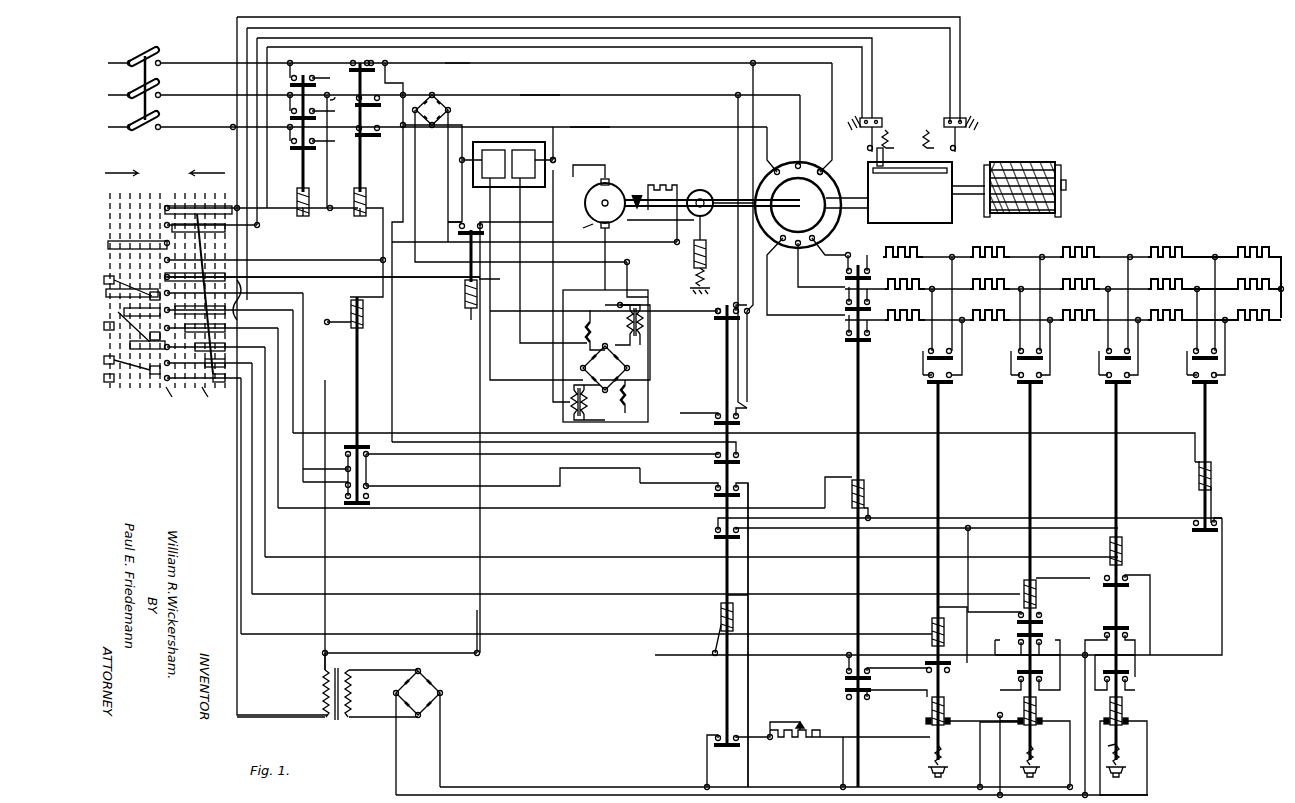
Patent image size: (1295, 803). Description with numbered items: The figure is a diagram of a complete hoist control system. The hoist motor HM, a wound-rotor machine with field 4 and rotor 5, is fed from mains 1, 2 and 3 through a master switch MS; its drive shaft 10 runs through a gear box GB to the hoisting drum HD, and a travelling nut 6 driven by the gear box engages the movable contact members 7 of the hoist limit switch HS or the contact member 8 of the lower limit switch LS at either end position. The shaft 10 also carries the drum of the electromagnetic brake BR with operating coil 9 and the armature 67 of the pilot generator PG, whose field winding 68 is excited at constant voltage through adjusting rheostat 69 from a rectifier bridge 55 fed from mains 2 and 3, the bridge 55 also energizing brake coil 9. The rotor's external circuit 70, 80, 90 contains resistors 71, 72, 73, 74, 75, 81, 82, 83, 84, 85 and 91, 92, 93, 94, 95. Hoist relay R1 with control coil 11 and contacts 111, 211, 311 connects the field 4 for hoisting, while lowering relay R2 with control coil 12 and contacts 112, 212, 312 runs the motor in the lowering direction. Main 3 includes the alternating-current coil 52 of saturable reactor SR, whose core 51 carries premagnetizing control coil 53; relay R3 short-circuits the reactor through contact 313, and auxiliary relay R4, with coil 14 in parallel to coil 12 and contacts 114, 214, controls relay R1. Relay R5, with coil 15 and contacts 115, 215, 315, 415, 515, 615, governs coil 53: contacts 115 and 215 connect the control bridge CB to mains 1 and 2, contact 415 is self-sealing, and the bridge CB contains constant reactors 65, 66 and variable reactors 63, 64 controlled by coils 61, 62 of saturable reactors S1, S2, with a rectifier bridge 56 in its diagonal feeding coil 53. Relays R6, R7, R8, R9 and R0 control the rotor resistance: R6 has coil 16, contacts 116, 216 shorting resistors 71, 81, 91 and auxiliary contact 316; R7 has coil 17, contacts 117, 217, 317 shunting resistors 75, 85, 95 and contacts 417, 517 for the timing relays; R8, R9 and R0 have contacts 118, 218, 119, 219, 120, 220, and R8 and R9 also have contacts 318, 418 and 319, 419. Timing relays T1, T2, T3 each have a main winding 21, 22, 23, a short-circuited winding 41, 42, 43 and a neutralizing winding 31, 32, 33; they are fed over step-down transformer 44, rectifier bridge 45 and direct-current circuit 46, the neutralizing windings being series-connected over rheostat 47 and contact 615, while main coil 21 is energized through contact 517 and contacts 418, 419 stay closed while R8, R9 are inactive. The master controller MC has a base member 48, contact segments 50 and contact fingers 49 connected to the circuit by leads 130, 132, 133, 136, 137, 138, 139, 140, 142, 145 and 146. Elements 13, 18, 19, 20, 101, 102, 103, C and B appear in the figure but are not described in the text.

The main 1 is at (520, 62).
The main 2 is at (553, 98).
The main 3 is at (603, 128).
The field 4 is at (830, 176).
The rotor 5 is at (830, 192).
The travelling nut 6 is at (883, 158).
The movable contact members 7 is at (867, 156).
The contact member 8 is at (954, 152).
The brake coil 9 is at (704, 250).
The drive shaft 10 is at (735, 201).
The control coil 11 is at (295, 200).
The control coil 12 is at (371, 224).
The relay R3 coil 13 is at (471, 309).
The relay coil 14 is at (363, 312).
The relay coil 15 is at (738, 615).
The coil 16 is at (1213, 462).
The coil 17 is at (864, 476).
The relay R8 coil 18 is at (1129, 544).
The relay R9 coil 19 is at (1024, 582).
The relay R0 coil 20 is at (949, 635).
The main winding 21 is at (948, 699).
The main winding 22 is at (1124, 701).
The main winding 23 is at (1023, 696).
The neutralizing winding 31 is at (929, 722).
The neutralizing winding 32 is at (1105, 747).
The neutralizing winding 33 is at (1032, 744).
The short-circuited winding 41 is at (930, 714).
The short-circuited winding 42 is at (1133, 720).
The short-circuited winding 43 is at (1035, 701).
The step-down transformer 44 is at (358, 732).
The rectifier bridge 45 is at (440, 686).
The direct-current circuit 46 is at (580, 782).
The adjusting rheostat 47 is at (845, 756).
The base member 48 is at (208, 401).
The contact fingers 49 is at (173, 401).
The contact segments 50 is at (221, 301).
The magnetizable core 51 is at (491, 145).
The alternating-current coil 52 is at (558, 160).
The premagnetizing control coil 53 is at (521, 145).
The rectifier bridge 55 is at (442, 108).
The rectifier bridge 56 is at (605, 364).
The coil 61 is at (642, 320).
The coil 62 is at (567, 392).
The variable reactor 63 is at (628, 323).
The variable reactor 64 is at (586, 391).
The constant reactor 65 is at (626, 393).
The constant reactor 66 is at (584, 322).
The armature 67 is at (586, 231).
The field winding 68 is at (636, 209).
The adjusting rheostat 69 is at (654, 185).
The rotor external circuit 70 is at (823, 245).
The resistor 71 is at (1234, 275).
The resistor 72 is at (1144, 246).
The resistor 73 is at (1055, 246).
The resistor 74 is at (966, 246).
The resistor 75 is at (903, 245).
The rotor external circuit 80 is at (797, 274).
The resistor 81 is at (1235, 277).
The resistor 82 is at (1144, 277).
The resistor 83 is at (1056, 277).
The resistor 84 is at (968, 277).
The resistor 85 is at (896, 279).
The rotor external circuit 90 is at (805, 286).
The resistor 91 is at (1260, 320).
The resistor 92 is at (1144, 309).
The resistor 93 is at (1055, 309).
The resistor 94 is at (967, 309).
The resistor 95 is at (906, 324).
The timer contact 101 is at (927, 656).
The timer contact 102 is at (1115, 666).
The timer contact 103 is at (1025, 666).
The relay contact 111 is at (309, 73).
The relay contact 112 is at (376, 70).
The relay contact 114 is at (368, 435).
The relay contact 115 is at (720, 318).
The relay contact 116 is at (1222, 358).
The relay contact 117 is at (846, 271).
The relay contact 118 is at (1134, 358).
The relay contact 119 is at (1046, 358).
The relay contact 120 is at (960, 358).
The lead 130 is at (580, 628).
The lead 132 is at (323, 392).
The lead 133 is at (435, 280).
The lead 136 is at (386, 429).
The lead 137 is at (565, 506).
The lead 138 is at (580, 554).
The lead 139 is at (580, 590).
The lead 140 is at (308, 486).
The lead 142 is at (265, 257).
The lead 145 is at (640, 466).
The lead 146 is at (422, 436).
The relay contact 211 is at (303, 106).
The relay contact 212 is at (384, 109).
The relay contact 214 is at (365, 500).
The relay contact 215 is at (713, 424).
The relay contact 216 is at (1222, 380).
The relay contact 217 is at (846, 303).
The relay contact 218 is at (1134, 380).
The relay contact 219 is at (1046, 380).
The relay contact 220 is at (960, 380).
The relay contact 311 is at (303, 137).
The relay contact 312 is at (408, 173).
The relay contact 313 is at (500, 219).
The relay contact 315 is at (713, 463).
The auxiliary relay contact 316 is at (1230, 530).
The relay contact 317 is at (846, 338).
The relay contact 318 is at (1150, 584).
The relay contact 319 is at (1040, 618).
The relay contact 415 is at (713, 496).
The relay contact 417 is at (850, 678).
The relay contact 418 is at (1140, 628).
The relay contact 419 is at (1041, 637).
The relay contact 515 is at (713, 538).
The relay contact 517 is at (886, 703).
The relay contact 615 is at (718, 746).
The master switch MS is at (470, 80).
The conductor C is at (232, 127).
The conductor B is at (334, 145).
The hoist relay R1 is at (286, 133).
The lowering relay R2 is at (374, 127).
The relay R3 is at (455, 263).
The auxiliary relay R4 is at (371, 400).
The relay R5 is at (706, 525).
The relay R6 is at (1218, 456).
The relay R7 is at (872, 526).
The relay R8 is at (1129, 571).
The relay R9 is at (1042, 571).
The relay R0 is at (951, 571).
The saturable reactor SR is at (509, 152).
The pilot generator PG is at (607, 220).
The brake BR is at (699, 195).
The hoist motor HM is at (798, 193).
The hoist limit switch HS is at (872, 130).
The lower limit switch LS is at (965, 123).
The gear box GB is at (926, 192).
The hoisting drum HD is at (1064, 164).
The control bridge CB is at (619, 356).
The saturable reactor S1 is at (637, 332).
The saturable reactor S2 is at (560, 402).
The timing relay T1 is at (923, 760).
The timing relay T2 is at (1123, 758).
The timing relay T3 is at (1041, 744).
The master controller MC is at (172, 286).